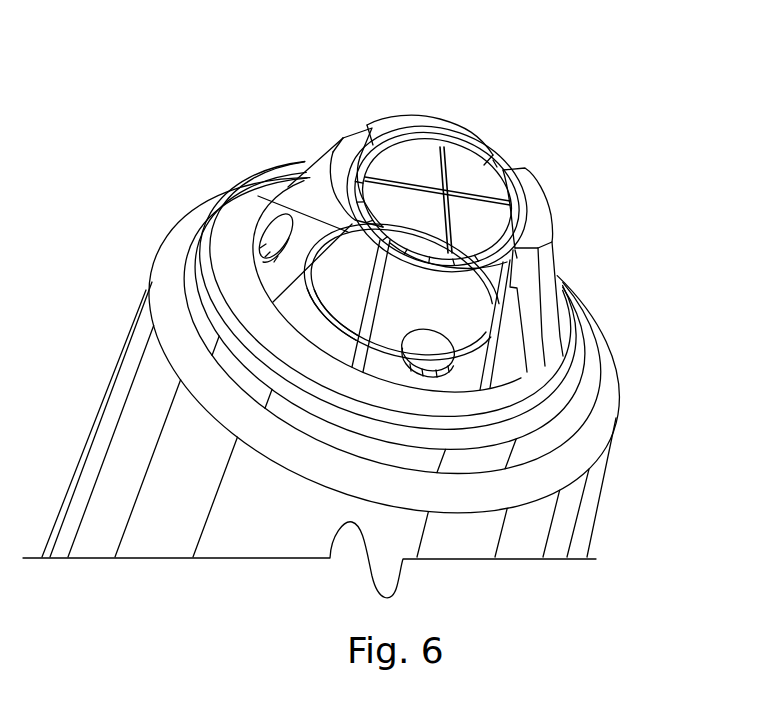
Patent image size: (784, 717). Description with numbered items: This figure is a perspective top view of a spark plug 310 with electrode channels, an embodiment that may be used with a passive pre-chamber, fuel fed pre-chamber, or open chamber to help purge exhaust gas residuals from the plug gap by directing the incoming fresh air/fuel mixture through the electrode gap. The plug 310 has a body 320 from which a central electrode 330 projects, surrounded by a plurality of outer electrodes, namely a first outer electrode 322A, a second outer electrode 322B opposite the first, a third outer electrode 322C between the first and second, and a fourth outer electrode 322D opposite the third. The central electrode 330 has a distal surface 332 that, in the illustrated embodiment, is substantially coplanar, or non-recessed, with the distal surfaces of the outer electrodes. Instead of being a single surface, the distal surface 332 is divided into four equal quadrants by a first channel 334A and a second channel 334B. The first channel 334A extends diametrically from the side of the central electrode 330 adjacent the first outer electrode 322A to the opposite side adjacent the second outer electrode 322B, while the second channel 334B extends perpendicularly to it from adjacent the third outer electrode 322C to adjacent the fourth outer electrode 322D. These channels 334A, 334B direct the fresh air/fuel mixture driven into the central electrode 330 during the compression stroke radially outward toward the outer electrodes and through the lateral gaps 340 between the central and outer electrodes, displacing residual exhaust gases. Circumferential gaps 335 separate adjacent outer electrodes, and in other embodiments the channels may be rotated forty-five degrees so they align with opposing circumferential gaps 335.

The spark plug 310 is at (568, 190).
The cylindrical body with flange 320 is at (606, 430).
The first outer electrode 322A is at (557, 322).
The second outer electrode 322B is at (312, 182).
The third outer electrode 322C is at (473, 353).
The fourth outer electrode 322D is at (410, 127).
The central electrode 330 is at (408, 153).
The distal surface 332 is at (383, 163).
The first channel 334A is at (517, 210).
The second channel 334B is at (445, 148).
The circumferential gap 335 is at (366, 138).
The lateral gap 340 is at (458, 253).